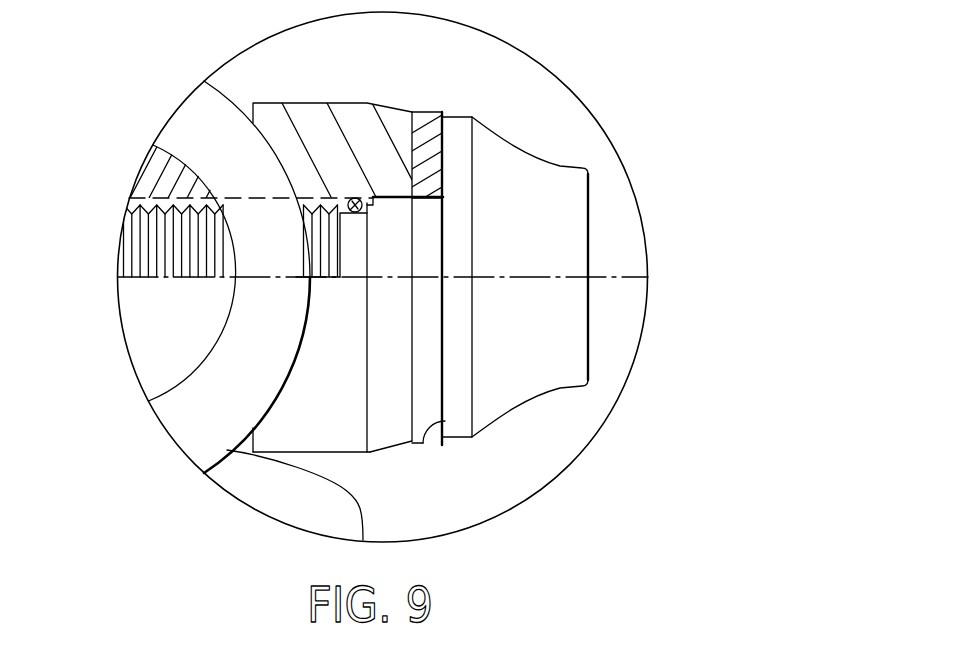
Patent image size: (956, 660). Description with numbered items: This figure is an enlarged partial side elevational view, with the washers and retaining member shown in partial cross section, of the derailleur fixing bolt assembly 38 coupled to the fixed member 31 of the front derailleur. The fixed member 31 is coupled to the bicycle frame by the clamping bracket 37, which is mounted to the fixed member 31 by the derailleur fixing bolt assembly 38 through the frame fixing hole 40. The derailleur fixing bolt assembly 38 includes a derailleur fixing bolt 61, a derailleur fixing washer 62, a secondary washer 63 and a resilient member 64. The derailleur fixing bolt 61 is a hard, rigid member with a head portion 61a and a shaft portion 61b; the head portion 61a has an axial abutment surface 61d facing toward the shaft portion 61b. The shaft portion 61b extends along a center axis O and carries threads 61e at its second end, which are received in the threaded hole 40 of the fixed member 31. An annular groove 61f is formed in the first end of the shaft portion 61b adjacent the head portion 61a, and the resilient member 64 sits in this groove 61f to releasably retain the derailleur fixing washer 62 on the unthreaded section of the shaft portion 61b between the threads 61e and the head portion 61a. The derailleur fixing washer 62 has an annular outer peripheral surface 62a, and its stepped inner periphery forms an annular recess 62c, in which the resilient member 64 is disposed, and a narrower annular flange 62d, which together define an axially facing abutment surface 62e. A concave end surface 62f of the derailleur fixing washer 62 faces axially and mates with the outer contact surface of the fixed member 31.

The fixed member 31 is at (153, 162).
The clamping bracket 37 is at (222, 97).
The derailleur fixing bolt assembly 38 is at (515, 100).
The frame fixing hole 40 is at (125, 227).
The derailleur fixing bolt 61 is at (520, 143).
The head portion 61a is at (530, 370).
The shaft portion 61b is at (122, 245).
The axial abutment surface 61d is at (425, 445).
The threads 61e is at (145, 263).
The annular groove 61f is at (352, 262).
The derailleur fixing washer 62 is at (343, 98).
The annular outer peripheral surface 62a is at (357, 453).
The annular recess 62c is at (307, 229).
The annular flange 62d is at (378, 206).
The axially facing abutment surface 62e is at (375, 208).
The concave end surface 62f is at (283, 385).
The secondary washer 63 is at (423, 108).
The resilient member 64 is at (358, 198).
The center axis O is at (623, 277).